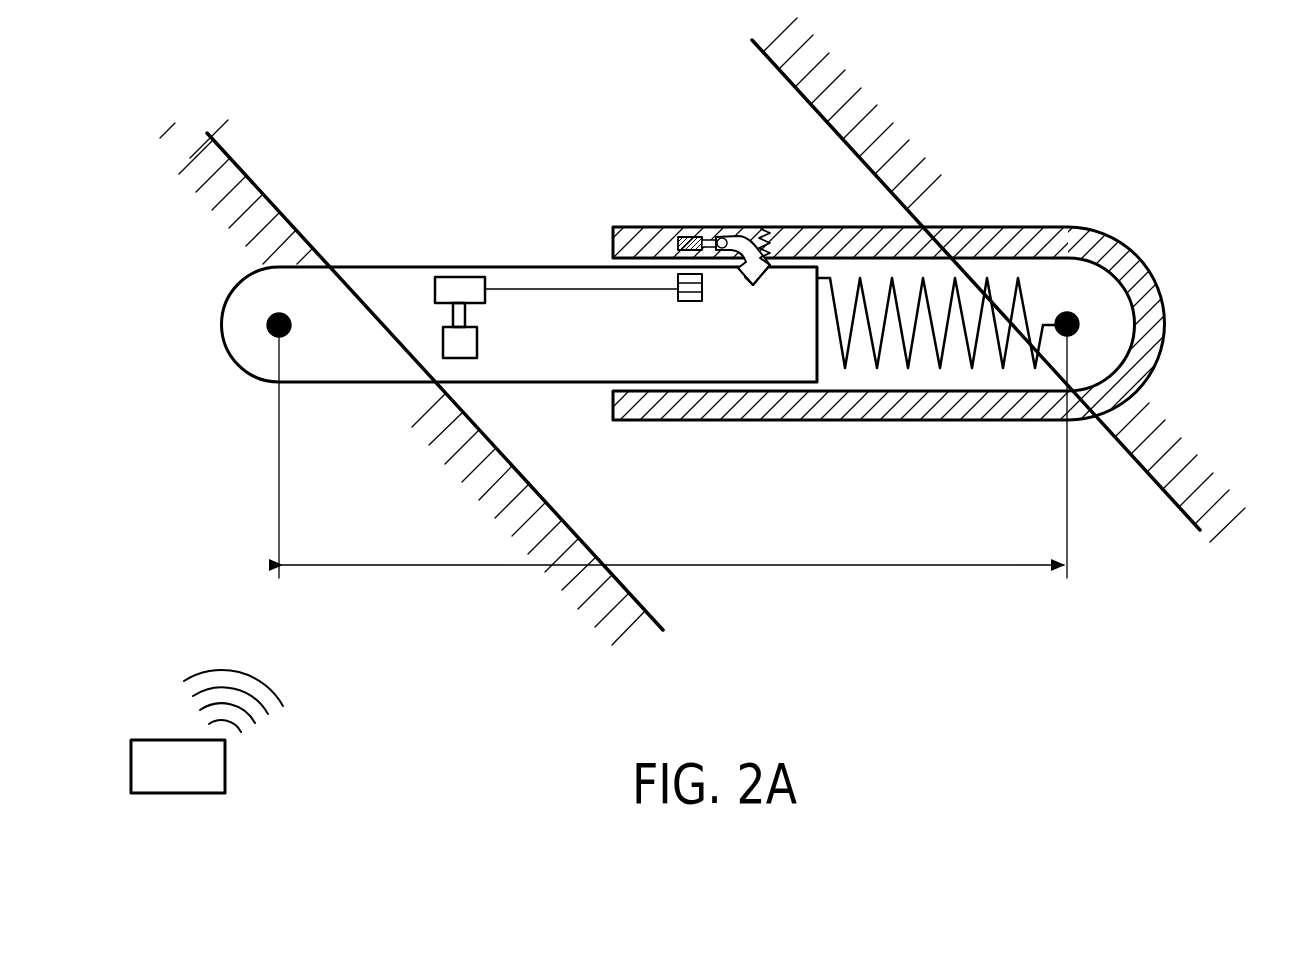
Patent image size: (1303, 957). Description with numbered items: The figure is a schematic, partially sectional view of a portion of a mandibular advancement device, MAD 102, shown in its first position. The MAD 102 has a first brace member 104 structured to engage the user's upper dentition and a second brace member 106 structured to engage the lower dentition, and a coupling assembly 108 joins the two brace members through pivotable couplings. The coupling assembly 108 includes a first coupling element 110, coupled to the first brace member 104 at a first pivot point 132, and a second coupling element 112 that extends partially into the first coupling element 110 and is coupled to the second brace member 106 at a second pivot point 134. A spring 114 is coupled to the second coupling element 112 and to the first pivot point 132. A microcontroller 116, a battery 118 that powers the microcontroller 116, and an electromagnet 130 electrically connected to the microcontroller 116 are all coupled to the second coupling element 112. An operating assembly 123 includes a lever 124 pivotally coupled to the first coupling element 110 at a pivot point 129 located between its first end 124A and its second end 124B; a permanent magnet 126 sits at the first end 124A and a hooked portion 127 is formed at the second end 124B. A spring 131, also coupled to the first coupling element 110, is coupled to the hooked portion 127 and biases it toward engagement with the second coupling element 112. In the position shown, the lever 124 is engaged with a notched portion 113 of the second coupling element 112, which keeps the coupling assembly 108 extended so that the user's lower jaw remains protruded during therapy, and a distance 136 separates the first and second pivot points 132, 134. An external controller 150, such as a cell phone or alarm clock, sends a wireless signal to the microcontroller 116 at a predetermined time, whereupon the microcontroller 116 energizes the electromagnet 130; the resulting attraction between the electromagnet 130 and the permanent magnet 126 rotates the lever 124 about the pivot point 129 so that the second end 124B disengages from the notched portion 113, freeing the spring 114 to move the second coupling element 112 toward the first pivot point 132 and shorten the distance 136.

The MAD 102 is at (433, 93).
The first brace member 104 is at (1178, 505).
The second brace member 106 is at (272, 203).
The coupling assembly 108 is at (596, 196).
The first coupling element 110 is at (851, 421).
The second coupling element 112 is at (384, 283).
The notched portion 113 is at (768, 282).
The spring 114 is at (1030, 305).
The microcontroller 116 is at (462, 276).
The battery 118 is at (477, 342).
The operating assembly 123 is at (751, 293).
The lever 124 is at (755, 227).
The first end 124A is at (680, 241).
The second end 124B is at (775, 262).
The permanent magnet 126 is at (700, 237).
The hooked portion 127 is at (748, 283).
The pivot point 129 is at (765, 230).
The electromagnet 130 is at (675, 300).
The spring 131 is at (790, 228).
The first pivot point 132 is at (1080, 323).
The second pivot point 134 is at (268, 327).
The distance 136 is at (731, 563).
The external controller 150 is at (225, 768).